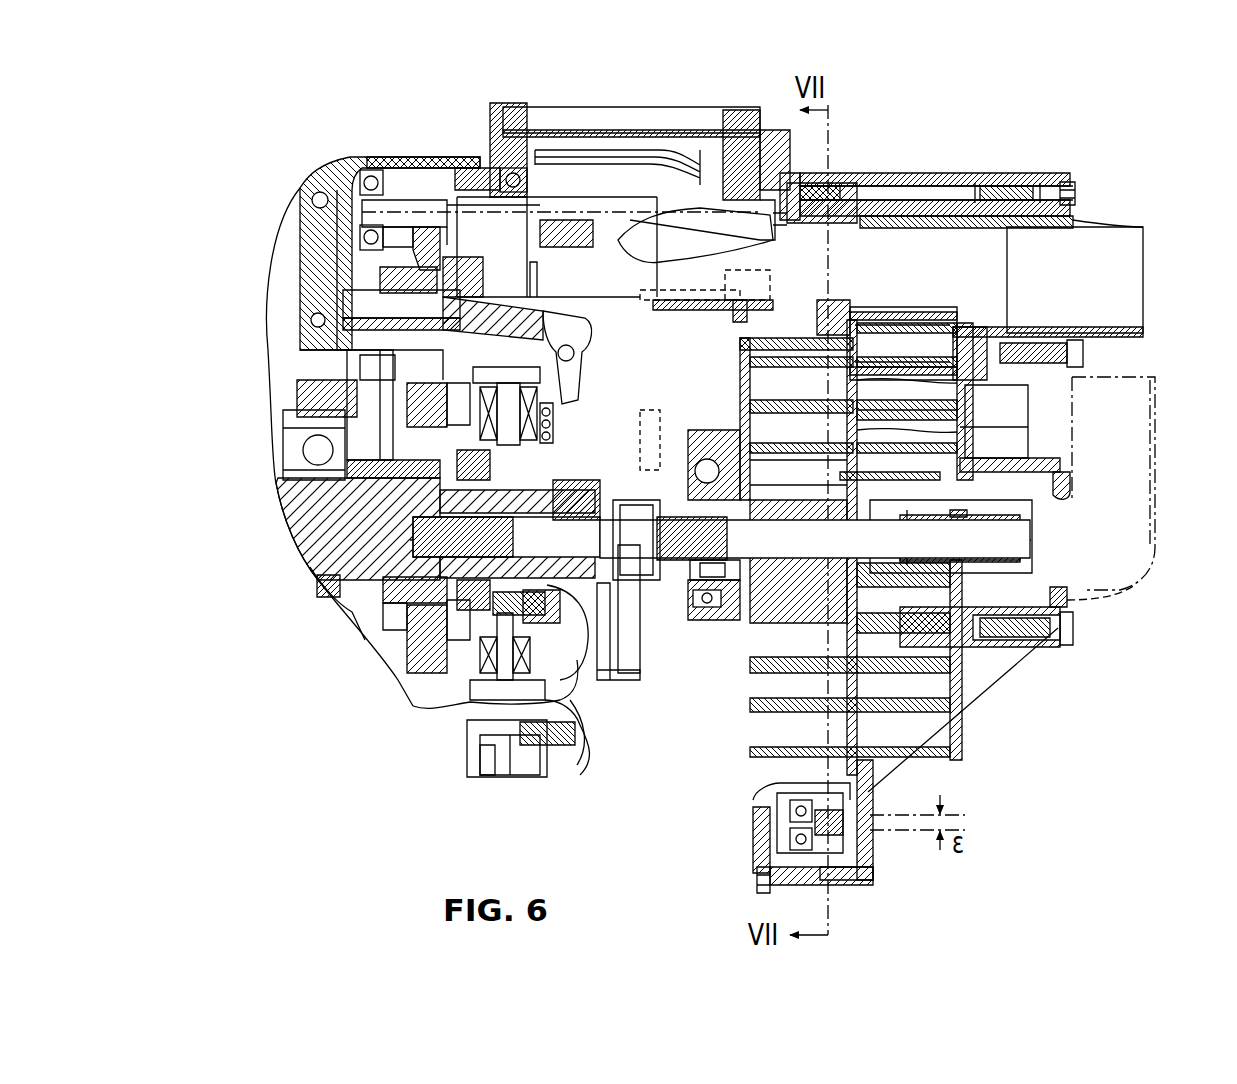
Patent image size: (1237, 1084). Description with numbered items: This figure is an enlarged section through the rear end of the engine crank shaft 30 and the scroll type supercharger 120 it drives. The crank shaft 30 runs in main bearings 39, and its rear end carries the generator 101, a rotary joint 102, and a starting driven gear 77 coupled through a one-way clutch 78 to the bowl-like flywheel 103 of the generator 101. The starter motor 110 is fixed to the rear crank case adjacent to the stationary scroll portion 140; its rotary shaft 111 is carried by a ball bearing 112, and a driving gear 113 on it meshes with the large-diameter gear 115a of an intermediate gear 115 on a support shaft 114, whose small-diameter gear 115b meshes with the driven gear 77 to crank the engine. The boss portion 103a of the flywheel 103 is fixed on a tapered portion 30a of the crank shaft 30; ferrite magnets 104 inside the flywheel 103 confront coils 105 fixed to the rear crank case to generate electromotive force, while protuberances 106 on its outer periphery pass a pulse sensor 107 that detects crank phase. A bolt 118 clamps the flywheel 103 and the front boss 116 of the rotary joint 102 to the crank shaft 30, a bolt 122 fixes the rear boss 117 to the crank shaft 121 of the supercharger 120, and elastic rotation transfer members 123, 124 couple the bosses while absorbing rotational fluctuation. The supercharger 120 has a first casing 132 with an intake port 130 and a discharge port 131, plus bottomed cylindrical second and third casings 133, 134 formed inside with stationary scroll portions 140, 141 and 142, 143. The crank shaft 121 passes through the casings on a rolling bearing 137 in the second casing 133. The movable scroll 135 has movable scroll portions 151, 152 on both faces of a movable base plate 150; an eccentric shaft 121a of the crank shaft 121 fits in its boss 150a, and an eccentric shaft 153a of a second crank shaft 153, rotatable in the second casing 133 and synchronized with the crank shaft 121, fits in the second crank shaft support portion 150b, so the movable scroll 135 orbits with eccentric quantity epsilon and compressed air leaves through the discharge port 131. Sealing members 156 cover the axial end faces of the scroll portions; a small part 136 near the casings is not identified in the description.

The crank shaft 30 is at (297, 537).
The tapered portion 30a is at (425, 598).
The main bearings 39 is at (290, 428).
The starting driven gear 77 is at (355, 385).
The one-way clutch 78 is at (385, 478).
The generator 101 is at (390, 706).
The rotary joint 102 is at (645, 700).
The flywheel 103 is at (445, 688).
The boss portion 103a is at (440, 565).
The ferrite magnets 104 is at (470, 680).
The coils 105 is at (573, 758).
The protuberances 106 is at (523, 735).
The pulse sensor 107 is at (487, 735).
The starter motor 110 is at (595, 120).
The rotary shaft 111 is at (410, 207).
The ball bearing 112 is at (347, 185).
The driving gear 113 is at (398, 185).
The support shaft 114 is at (390, 298).
The intermediate gear 115 is at (395, 258).
The large-diameter gear 115a is at (425, 225).
The small-diameter gear 115b is at (405, 243).
The front boss 116 is at (577, 655).
The rear boss 117 is at (653, 697).
The bolt 118 is at (573, 533).
The scroll type supercharger 120 is at (1125, 170).
The crank shaft 121 is at (722, 600).
The eccentric shaft 121a is at (1060, 599).
The bolt 122 is at (633, 720).
The rotation transfer member 123 is at (653, 427).
The rotation transfer member 124 is at (637, 470).
The intake port 130 is at (1120, 277).
The discharge port 131 is at (1053, 535).
The first casing 132 is at (1050, 177).
The second casing 133 is at (847, 175).
The third casing 134 is at (1000, 177).
The movable scroll 135 is at (940, 753).
The bolt 136 is at (747, 327).
The rolling bearing 137 is at (748, 382).
The stationary scroll portion 140 is at (777, 453).
The stationary scroll portion 141 is at (850, 300).
The stationary scroll portion 142 is at (905, 430).
The stationary scroll portion 143 is at (917, 360).
The movable base plate 150 is at (907, 713).
The boss 150a is at (907, 443).
The second crank shaft support portion 150b is at (850, 840).
The movable scroll portion 151 is at (865, 730).
The movable scroll portion 152 is at (913, 672).
The second crank shaft 153 is at (767, 838).
The eccentric shaft 153a is at (862, 790).
The sealing members 156 is at (905, 405).